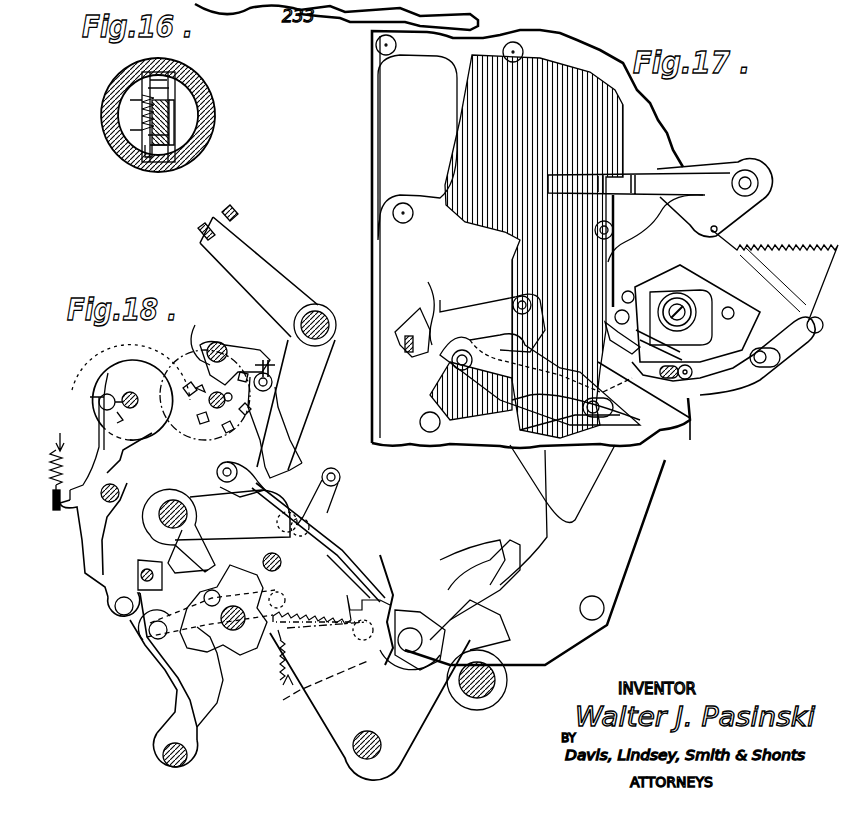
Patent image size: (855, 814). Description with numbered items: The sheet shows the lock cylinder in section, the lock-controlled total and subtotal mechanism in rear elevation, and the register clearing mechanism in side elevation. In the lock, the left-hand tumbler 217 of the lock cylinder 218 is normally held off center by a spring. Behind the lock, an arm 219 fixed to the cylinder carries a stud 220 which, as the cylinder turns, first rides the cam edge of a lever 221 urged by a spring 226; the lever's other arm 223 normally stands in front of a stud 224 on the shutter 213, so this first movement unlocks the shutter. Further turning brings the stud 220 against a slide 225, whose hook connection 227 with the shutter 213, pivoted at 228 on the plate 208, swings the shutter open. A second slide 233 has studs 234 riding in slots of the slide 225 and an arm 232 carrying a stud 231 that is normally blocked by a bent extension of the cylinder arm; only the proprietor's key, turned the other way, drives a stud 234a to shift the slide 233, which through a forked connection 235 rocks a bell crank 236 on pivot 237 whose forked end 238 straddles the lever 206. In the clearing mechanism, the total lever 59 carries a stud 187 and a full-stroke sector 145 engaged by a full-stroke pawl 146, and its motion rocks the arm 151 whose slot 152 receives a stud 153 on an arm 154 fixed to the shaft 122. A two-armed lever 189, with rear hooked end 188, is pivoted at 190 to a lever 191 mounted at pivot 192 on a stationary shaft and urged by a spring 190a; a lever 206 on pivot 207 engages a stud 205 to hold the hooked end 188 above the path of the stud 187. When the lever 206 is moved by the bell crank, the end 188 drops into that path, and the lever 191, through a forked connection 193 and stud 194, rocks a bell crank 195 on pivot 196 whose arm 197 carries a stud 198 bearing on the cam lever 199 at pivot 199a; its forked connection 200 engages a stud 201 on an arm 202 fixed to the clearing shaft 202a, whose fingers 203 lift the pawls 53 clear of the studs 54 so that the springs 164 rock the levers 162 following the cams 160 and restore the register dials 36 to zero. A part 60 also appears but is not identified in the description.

In FIG. 16, the left-hand tumbler 217 is at (156, 152).
In FIG. 16, the lock cylinder 218 is at (185, 135).
In FIG. 17, the plate 208 is at (372, 107).
In FIG. 17, the shutter 213 is at (470, 135).
In FIG. 17, the arm 223 is at (682, 162).
In FIG. 17, the stud 224 is at (636, 203).
In FIG. 17, the lever 221 is at (623, 232).
In FIG. 17, the arm 219 is at (625, 272).
In FIG. 17, the stud 220 is at (616, 317).
In FIG. 17, the stud 231 is at (635, 318).
In FIG. 17, the spring 226 is at (745, 255).
In FIG. 17, the slide 233 is at (752, 373).
In FIG. 17, the studs 234 is at (588, 417).
In FIG. 17, the stud 234a is at (687, 378).
In FIG. 17, the arm 232 is at (614, 365).
In FIG. 17, the forked end 238 is at (411, 305).
In FIG. 18, the forked end 238 is at (232, 206).
In FIG. 17, the lever 206 is at (398, 330).
In FIG. 18, the lever 206 is at (322, 376).
In FIG. 17, the bell crank 236 is at (443, 300).
In FIG. 17, the pivot 237 is at (512, 300).
In FIG. 17, the forked connection 235 is at (530, 356).
In FIG. 17, the hook connection 227 is at (458, 365).
In FIG. 17, the slide 225 is at (515, 395).
In FIG. 17, the pivot 228 is at (430, 432).
In FIG. 18, the register indicator dial 36 is at (117, 345).
In FIG. 18, the cam 160 is at (108, 373).
In FIG. 18, the lever 162 is at (88, 396).
In FIG. 18, the spring 164 is at (58, 438).
In FIG. 18, the bell crank 195 is at (155, 537).
In FIG. 18, the pivot 196 is at (160, 513).
In FIG. 18, the arm 197 is at (198, 496).
In FIG. 18, the stud 194 is at (152, 580).
In FIG. 18, the forked connection 193 is at (112, 588).
In FIG. 18, the pivot 190 is at (152, 630).
In FIG. 18, the lever 191 is at (162, 656).
In FIG. 18, the pivot 192 is at (160, 748).
In FIG. 18, the full-stroke pawl 146 is at (238, 645).
In FIG. 18, the full-stroke sector 145 is at (290, 703).
In FIG. 18, the spring 190a is at (290, 684).
In FIG. 18, the pivot 60 is at (353, 745).
In FIG. 18, the total lever 59 is at (547, 647).
In FIG. 18, the shaft 122 is at (488, 700).
In FIG. 18, the arm 154 is at (462, 700).
In FIG. 18, the slot 152 is at (413, 658).
In FIG. 18, the stud 153 is at (395, 655).
In FIG. 18, the stud 187 is at (406, 610).
In FIG. 18, the arm 151 is at (448, 583).
In FIG. 18, the hooked end 188 is at (357, 597).
In FIG. 18, the two-armed lever 189 is at (340, 557).
In FIG. 18, the stud 198 is at (300, 510).
In FIG. 18, the cam lever 199 is at (298, 456).
In FIG. 18, the pivot 199a is at (263, 560).
In FIG. 18, the stud 205 is at (224, 466).
In FIG. 18, the pawl 53 is at (215, 391).
In FIG. 18, the studs 54 is at (200, 387).
In FIG. 18, the fingers 203 is at (228, 347).
In FIG. 18, the arm 202 is at (258, 357).
In FIG. 18, the clearing shaft 202a is at (215, 297).
In FIG. 18, the stud 201 is at (268, 370).
In FIG. 18, the forked connection 200 is at (278, 370).
In FIG. 18, the pivot 207 is at (318, 312).